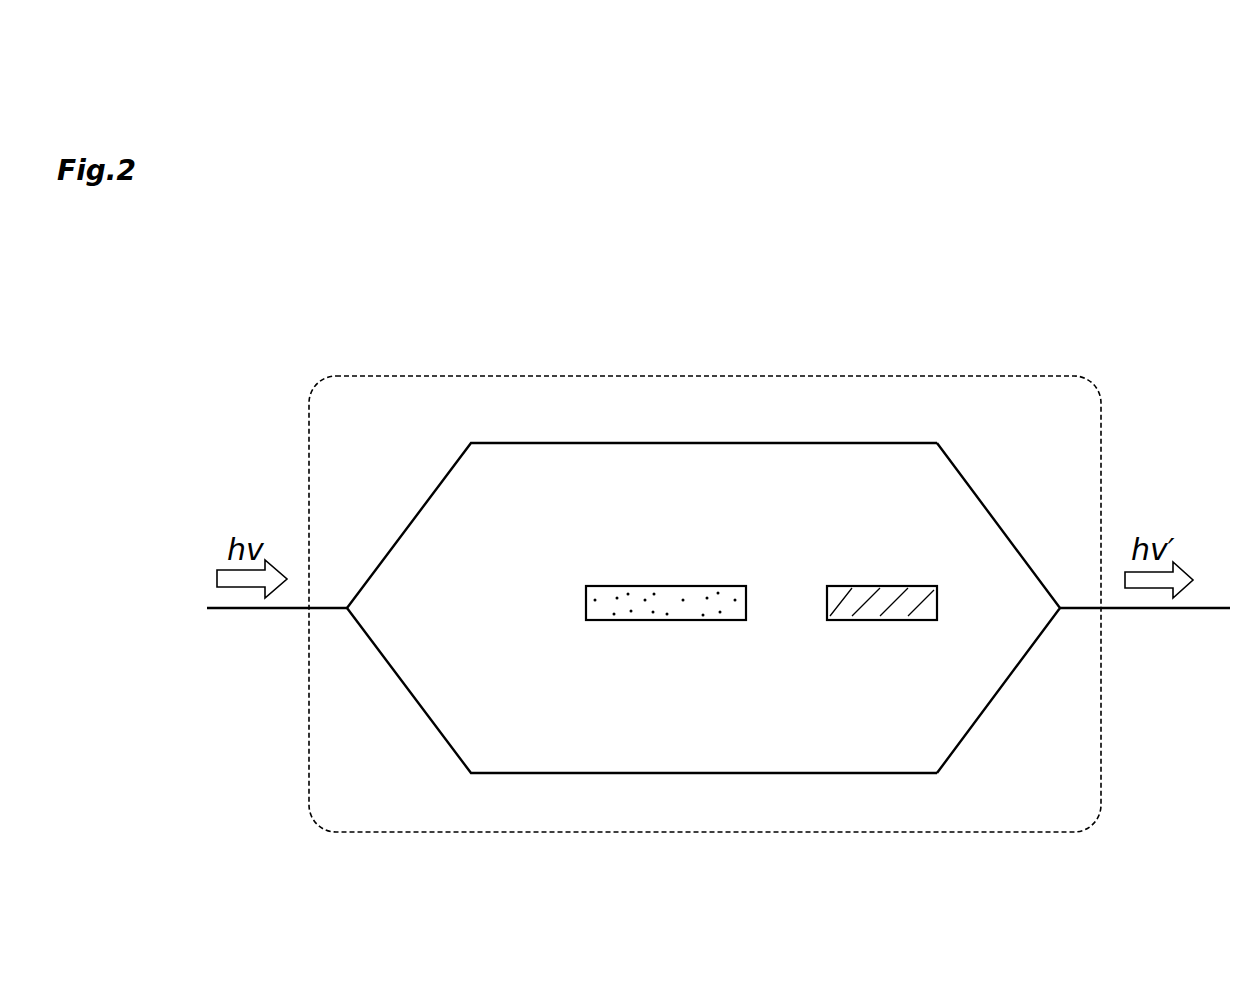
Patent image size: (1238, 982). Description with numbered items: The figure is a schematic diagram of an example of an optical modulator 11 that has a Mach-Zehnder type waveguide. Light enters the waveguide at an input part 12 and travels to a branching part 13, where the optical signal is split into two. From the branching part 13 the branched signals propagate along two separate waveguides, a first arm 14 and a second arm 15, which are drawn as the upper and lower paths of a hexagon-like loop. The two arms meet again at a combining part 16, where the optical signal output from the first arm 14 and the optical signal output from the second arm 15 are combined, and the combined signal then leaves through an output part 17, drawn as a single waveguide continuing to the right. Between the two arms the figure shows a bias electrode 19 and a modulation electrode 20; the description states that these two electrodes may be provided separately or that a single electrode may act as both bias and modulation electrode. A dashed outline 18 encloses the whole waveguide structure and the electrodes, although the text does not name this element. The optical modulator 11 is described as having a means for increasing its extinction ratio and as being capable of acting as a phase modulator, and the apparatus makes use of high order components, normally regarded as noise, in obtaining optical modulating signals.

The optical modulator 11 is at (803, 323).
The input part 12 is at (233, 612).
The branching part 13 is at (347, 611).
The first arm 14 is at (522, 443).
The second arm 15 is at (522, 775).
The combining part 16 is at (1061, 611).
The output part 17 is at (1168, 612).
The substrate 18 is at (1030, 376).
The bias electrode 19 is at (653, 622).
The modulation electrode 20 is at (852, 622).